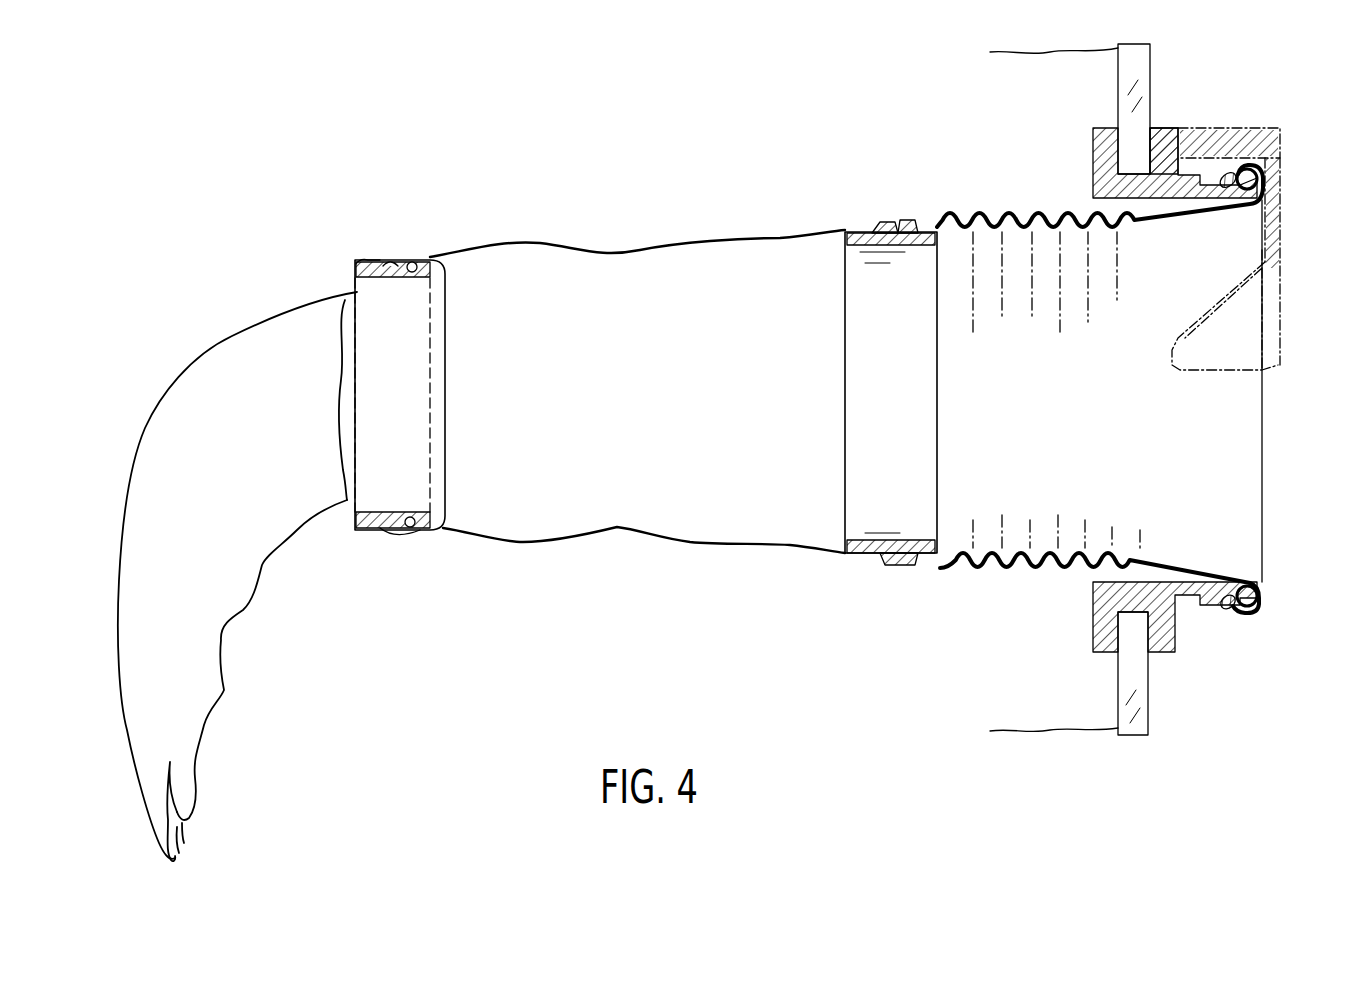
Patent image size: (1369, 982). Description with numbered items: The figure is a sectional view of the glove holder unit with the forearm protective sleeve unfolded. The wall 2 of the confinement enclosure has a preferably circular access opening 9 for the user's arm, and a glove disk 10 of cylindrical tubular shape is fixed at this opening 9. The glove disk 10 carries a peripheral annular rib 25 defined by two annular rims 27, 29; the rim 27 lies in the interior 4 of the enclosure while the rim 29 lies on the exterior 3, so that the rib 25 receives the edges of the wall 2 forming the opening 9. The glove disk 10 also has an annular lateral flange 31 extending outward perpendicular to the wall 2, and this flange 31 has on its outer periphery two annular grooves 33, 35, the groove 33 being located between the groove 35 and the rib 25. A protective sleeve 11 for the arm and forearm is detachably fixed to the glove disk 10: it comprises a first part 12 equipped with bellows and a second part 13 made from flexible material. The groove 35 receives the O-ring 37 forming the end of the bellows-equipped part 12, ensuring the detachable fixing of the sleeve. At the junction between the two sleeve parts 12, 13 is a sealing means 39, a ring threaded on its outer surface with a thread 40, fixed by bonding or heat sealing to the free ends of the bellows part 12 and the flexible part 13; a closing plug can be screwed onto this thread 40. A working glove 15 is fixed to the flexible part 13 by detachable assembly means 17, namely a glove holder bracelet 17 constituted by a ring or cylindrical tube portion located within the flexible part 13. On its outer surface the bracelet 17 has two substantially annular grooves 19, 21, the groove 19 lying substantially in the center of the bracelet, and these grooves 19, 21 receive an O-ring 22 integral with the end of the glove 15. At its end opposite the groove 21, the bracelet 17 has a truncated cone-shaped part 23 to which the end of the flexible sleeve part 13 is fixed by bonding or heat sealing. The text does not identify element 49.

The wall 2 is at (1150, 715).
The exterior 3 is at (1328, 84).
The interior 4 is at (722, 172).
The access opening 9 is at (1062, 201).
The glove disk 10 is at (1095, 640).
The protective sleeve 11 is at (878, 572).
The first sleeve part 12 is at (1010, 566).
The second sleeve part 13 is at (668, 540).
The working glove 15 is at (270, 622).
The glove holder bracelet 17 is at (364, 538).
The annular groove 19 is at (390, 262).
The annular groove 21 is at (416, 262).
The O-ring 22 is at (410, 528).
The truncated cone-shaped part 23 is at (358, 262).
The annular rib 25 is at (1135, 155).
The rim 27 is at (1098, 150).
The rim 29 is at (1163, 130).
The lateral flange 31 is at (1186, 600).
The annular groove 33 is at (1195, 132).
The annular groove 35 is at (1258, 181).
The O-ring 37 is at (1232, 608).
The sealing means 39 is at (878, 216).
The thread 40 is at (898, 216).
The hatched strip 49 is at (1280, 212).